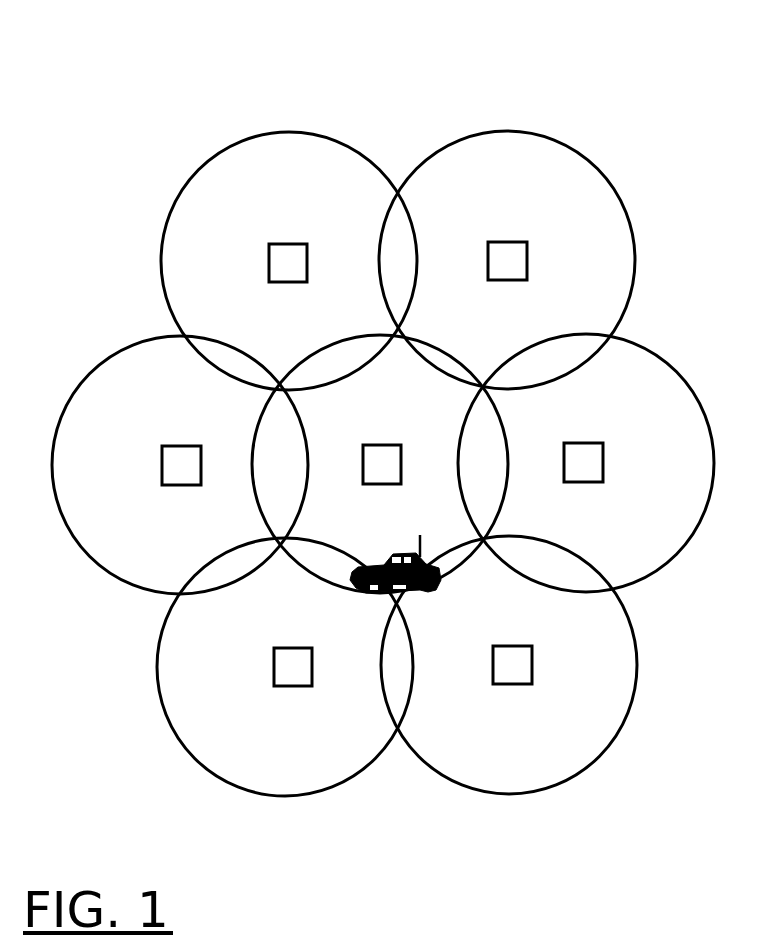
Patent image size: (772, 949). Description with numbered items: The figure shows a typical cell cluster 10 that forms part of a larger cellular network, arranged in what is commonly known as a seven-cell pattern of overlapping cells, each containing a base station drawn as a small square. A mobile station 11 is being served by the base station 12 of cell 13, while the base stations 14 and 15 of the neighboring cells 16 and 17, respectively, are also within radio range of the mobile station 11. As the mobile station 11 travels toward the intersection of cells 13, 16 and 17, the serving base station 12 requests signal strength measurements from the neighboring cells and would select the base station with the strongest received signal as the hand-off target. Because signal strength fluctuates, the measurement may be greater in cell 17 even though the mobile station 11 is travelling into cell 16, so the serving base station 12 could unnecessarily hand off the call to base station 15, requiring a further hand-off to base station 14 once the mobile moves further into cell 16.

The cell cluster 10 is at (614, 112).
The mobile station 11 is at (436, 572).
The base station 12 is at (383, 445).
The cell 13 is at (413, 395).
The base station 14 is at (275, 648).
The base station 15 is at (513, 646).
The cell 16 is at (308, 763).
The cell 17 is at (509, 741).